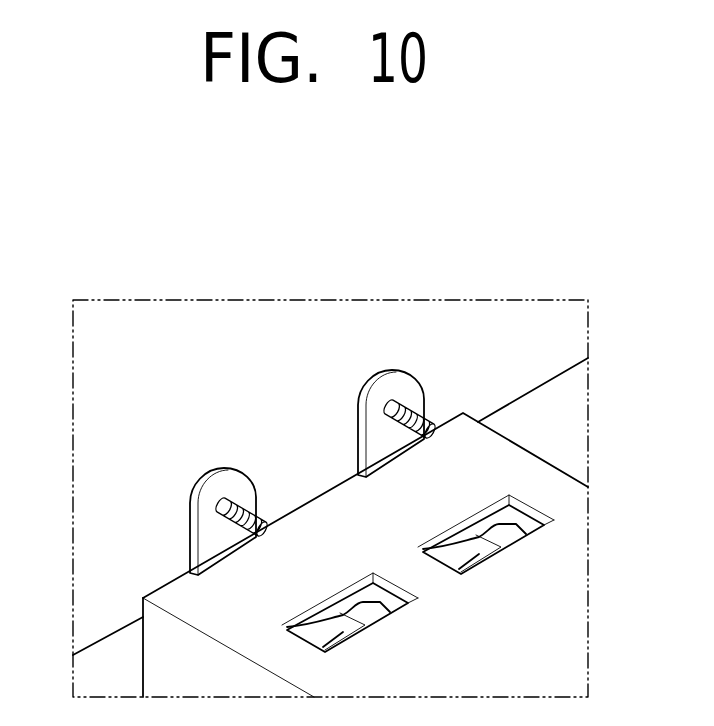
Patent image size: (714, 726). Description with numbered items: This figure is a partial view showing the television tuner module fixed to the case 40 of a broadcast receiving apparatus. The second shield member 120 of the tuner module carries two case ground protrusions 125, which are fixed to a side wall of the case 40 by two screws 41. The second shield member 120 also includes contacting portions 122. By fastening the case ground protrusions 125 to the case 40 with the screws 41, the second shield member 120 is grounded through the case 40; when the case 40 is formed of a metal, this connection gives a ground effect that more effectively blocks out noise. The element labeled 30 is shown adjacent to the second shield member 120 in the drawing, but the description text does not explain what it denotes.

The case 40 is at (184, 322).
The screw 41 is at (223, 527).
The case ground protrusion 125 is at (225, 468).
The frame 30 is at (562, 412).
The second shield member 120 is at (565, 456).
The contacting portion 122 is at (502, 533).